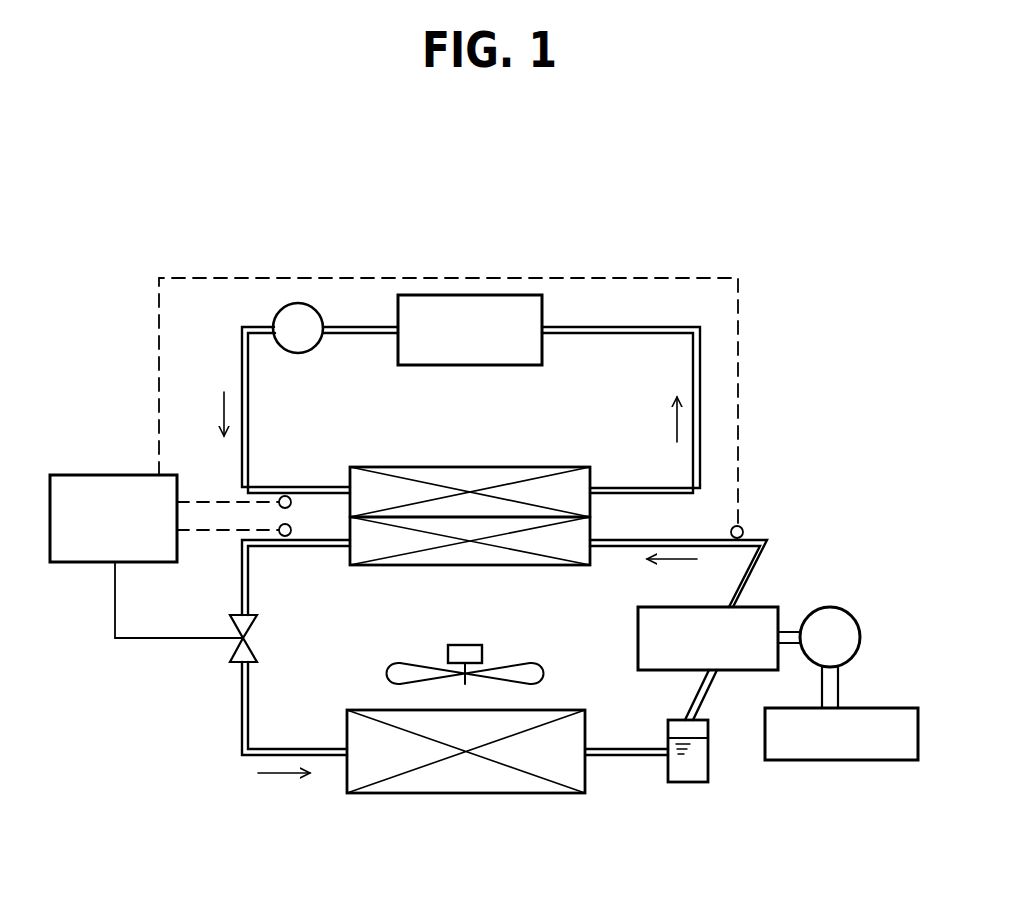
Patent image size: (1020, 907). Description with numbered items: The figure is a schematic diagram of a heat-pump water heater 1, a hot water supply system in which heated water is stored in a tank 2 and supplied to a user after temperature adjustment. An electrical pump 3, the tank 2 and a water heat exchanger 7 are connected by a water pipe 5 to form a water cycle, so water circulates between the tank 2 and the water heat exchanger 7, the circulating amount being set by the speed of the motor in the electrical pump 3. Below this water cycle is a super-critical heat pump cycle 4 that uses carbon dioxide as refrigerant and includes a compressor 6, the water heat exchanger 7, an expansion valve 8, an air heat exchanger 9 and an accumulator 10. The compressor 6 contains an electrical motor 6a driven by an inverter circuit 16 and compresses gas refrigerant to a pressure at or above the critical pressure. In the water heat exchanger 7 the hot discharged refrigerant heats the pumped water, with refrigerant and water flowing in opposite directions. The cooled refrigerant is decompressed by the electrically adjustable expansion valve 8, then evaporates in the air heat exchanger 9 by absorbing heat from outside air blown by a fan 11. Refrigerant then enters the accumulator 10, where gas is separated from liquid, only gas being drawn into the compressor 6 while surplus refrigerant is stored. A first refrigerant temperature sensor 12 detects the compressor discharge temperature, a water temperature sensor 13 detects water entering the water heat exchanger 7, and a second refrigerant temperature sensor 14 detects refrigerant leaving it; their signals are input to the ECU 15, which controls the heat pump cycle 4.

The heat-pump water heater 1 is at (692, 248).
The tank 2 is at (470, 295).
The electrical pump 3 is at (300, 303).
The super-critical heat pump cycle 4 is at (797, 543).
The water pipe 5 is at (701, 348).
The compressor 6 is at (738, 670).
The electrical motor 6a is at (851, 616).
The water heat exchanger 7 is at (542, 467).
The expansion valve 8 is at (237, 664).
The air heat exchanger 9 is at (532, 793).
The accumulator 10 is at (690, 782).
The fan 11 is at (525, 662).
The first refrigerant temperature sensor 12 is at (744, 527).
The water temperature sensor 13 is at (285, 495).
The second refrigerant temperature sensor 14 is at (285, 537).
The electrical control unit (ECU) 15 is at (108, 475).
The inverter circuit 16 is at (870, 760).